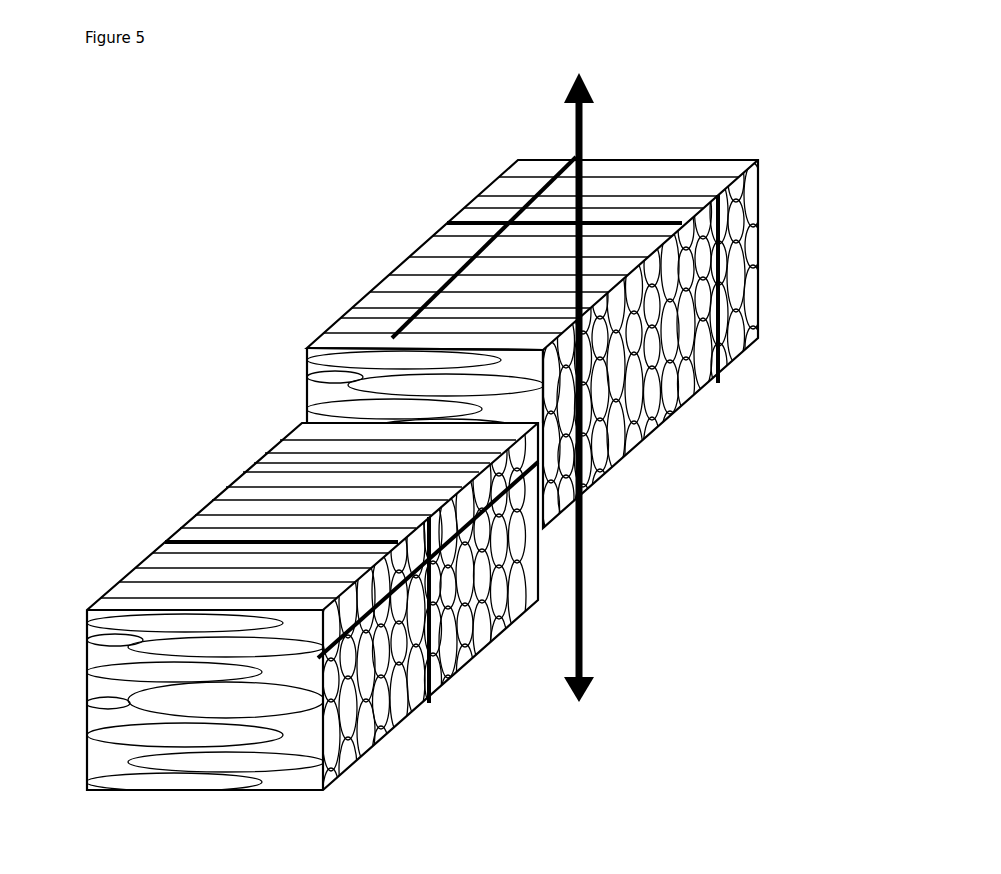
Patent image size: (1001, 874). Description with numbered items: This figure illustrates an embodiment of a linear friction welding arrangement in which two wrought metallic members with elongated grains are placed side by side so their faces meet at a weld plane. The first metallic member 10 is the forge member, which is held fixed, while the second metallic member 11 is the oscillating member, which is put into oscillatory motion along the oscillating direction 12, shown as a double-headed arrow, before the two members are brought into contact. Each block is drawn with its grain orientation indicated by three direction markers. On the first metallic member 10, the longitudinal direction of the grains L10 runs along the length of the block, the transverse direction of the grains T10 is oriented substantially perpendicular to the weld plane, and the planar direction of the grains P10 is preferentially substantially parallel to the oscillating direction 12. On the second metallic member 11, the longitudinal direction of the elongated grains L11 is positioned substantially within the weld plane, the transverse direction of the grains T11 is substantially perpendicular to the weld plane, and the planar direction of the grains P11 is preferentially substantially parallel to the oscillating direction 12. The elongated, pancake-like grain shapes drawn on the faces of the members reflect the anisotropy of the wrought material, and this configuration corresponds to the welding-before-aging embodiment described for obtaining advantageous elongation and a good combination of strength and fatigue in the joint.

The first metallic member 10 is at (285, 609).
The second metallic member 11 is at (540, 315).
The oscillating direction 12 is at (583, 580).
The longitudinal direction of the grains of the first member L10 is at (265, 543).
The longitudinal direction of the grains of the second member L11 is at (485, 223).
The transverse direction of the grains of the first member T10 is at (382, 613).
The transverse direction of the grains of the second member T11 is at (555, 170).
The planar direction of the grains of the first member P10 is at (443, 640).
The planar direction of the grains of the second member P11 is at (720, 283).